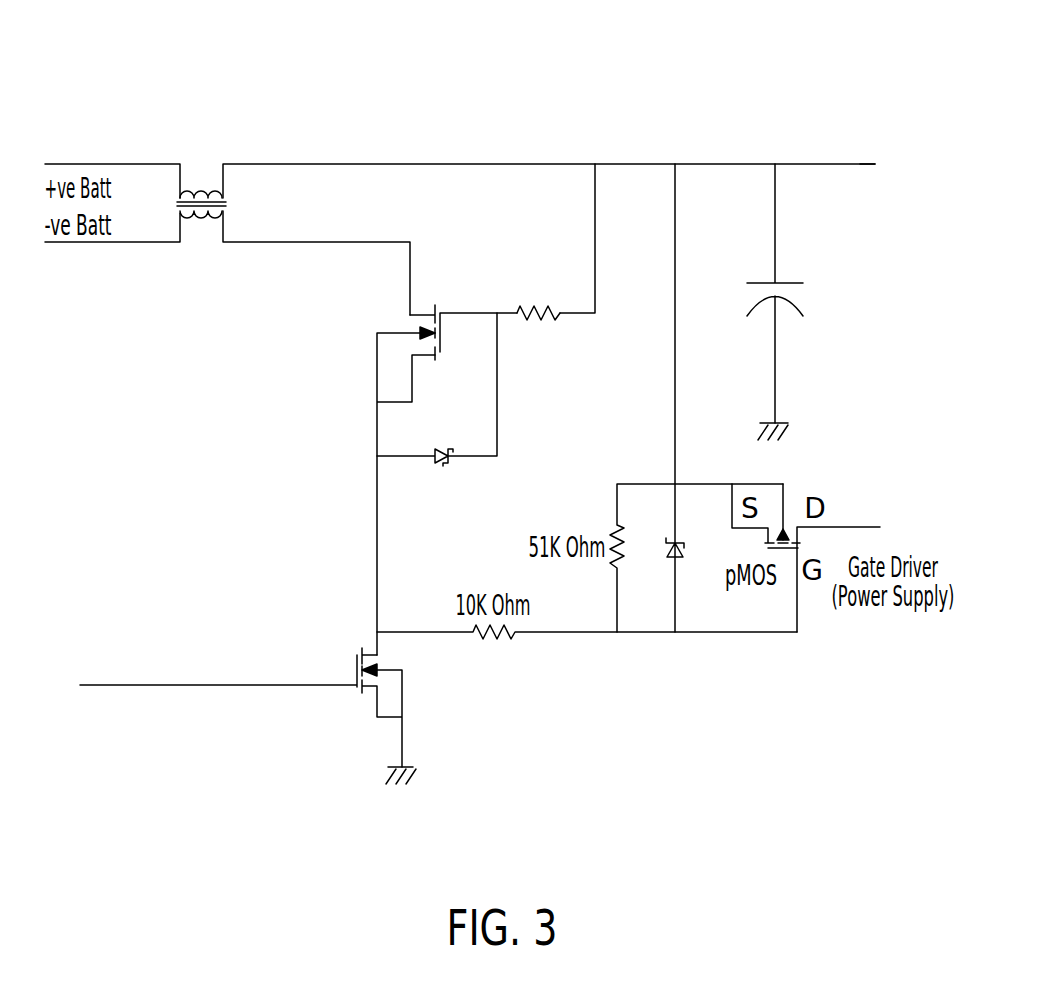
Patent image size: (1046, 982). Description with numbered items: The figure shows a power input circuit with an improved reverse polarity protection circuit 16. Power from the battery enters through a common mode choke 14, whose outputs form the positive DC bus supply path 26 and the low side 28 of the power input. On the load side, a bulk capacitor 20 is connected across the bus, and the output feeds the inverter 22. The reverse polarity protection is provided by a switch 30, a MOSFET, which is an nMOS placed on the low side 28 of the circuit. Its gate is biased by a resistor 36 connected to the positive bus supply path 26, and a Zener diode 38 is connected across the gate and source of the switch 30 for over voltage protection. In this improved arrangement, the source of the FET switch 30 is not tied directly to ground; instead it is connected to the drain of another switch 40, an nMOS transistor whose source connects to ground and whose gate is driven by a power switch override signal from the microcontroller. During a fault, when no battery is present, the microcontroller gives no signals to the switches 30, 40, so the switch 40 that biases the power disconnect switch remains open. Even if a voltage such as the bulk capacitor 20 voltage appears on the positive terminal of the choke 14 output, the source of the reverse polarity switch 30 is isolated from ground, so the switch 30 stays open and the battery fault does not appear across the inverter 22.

The common mode choke 14 is at (188, 193).
The reverse polarity protection circuit 16 is at (452, 84).
The bulk capacitor 20 is at (783, 279).
The inverter 22 is at (897, 183).
The DC bus supply path 26 is at (250, 163).
The low side 28 is at (270, 243).
The switch 30 is at (332, 387).
The resistor 36 is at (533, 307).
The Zener diode 38 is at (446, 465).
The switch 40 is at (338, 596).